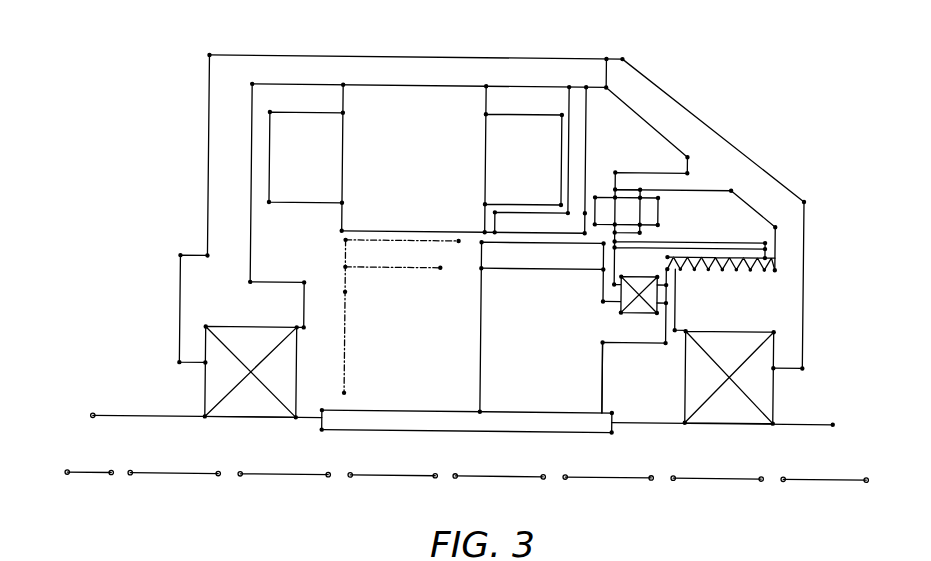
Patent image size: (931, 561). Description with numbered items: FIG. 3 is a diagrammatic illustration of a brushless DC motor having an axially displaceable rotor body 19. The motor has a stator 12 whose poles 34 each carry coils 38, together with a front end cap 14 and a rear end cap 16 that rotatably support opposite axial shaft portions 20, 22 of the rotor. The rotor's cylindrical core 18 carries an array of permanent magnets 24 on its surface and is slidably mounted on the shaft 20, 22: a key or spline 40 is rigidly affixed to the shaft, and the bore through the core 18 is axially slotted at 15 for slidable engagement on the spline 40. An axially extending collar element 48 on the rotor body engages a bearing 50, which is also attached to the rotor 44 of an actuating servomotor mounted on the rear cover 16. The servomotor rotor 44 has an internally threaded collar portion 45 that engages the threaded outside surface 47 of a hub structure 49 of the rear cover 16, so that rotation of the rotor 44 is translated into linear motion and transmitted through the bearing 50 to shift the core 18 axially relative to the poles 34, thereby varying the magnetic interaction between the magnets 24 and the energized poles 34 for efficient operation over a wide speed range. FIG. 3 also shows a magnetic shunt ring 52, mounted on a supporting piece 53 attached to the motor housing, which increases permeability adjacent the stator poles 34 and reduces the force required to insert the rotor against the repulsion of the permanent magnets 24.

The stator 12 is at (441, 86).
The front end cap 14 is at (178, 300).
The axial slot 15 is at (550, 410).
The rear end cap 16 is at (762, 166).
The cylindrical core 18 is at (497, 318).
The rotor body 19 is at (348, 293).
The axial shaft portion 20 is at (155, 453).
The axial shaft portion 22 is at (800, 458).
The permanent magnets 24 is at (525, 252).
The stator pole 34 is at (367, 216).
The coil 38 is at (300, 137).
The key or spline 40 is at (438, 420).
The servomotor rotor 44 is at (647, 258).
The internally threaded collar portion 45 is at (782, 238).
The threaded outside surface 47 is at (747, 273).
The collar element 48 is at (627, 342).
The hub structure 49 is at (760, 312).
The bearing 50 is at (258, 403).
The magnetic shunt ring 52 is at (538, 181).
The supporting piece 53 is at (575, 163).